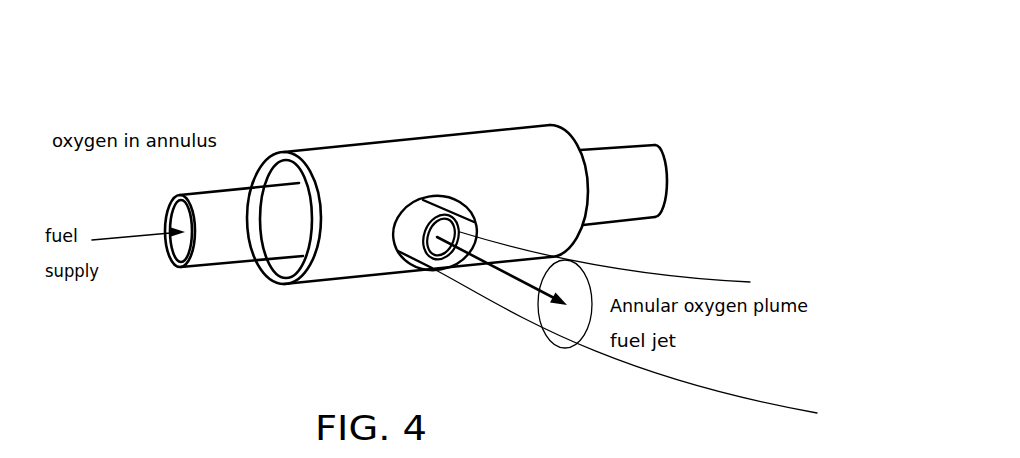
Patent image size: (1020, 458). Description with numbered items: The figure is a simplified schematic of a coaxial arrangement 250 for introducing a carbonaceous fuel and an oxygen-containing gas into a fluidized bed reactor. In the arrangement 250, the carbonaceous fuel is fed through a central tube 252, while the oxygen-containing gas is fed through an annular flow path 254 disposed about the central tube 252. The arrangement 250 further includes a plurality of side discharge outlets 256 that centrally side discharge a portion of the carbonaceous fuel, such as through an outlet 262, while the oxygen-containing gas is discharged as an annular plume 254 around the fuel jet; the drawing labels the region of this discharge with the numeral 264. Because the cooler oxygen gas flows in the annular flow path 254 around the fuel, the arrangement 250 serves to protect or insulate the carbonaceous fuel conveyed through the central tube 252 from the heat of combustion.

The coaxial arrangement 250 is at (586, 92).
The central tube 252 is at (222, 240).
The annular flow path 254 is at (278, 176).
The side discharge outlet 256 is at (430, 180).
The outlet 262 is at (413, 226).
The annular oxygen plume boundary 264 is at (452, 278).